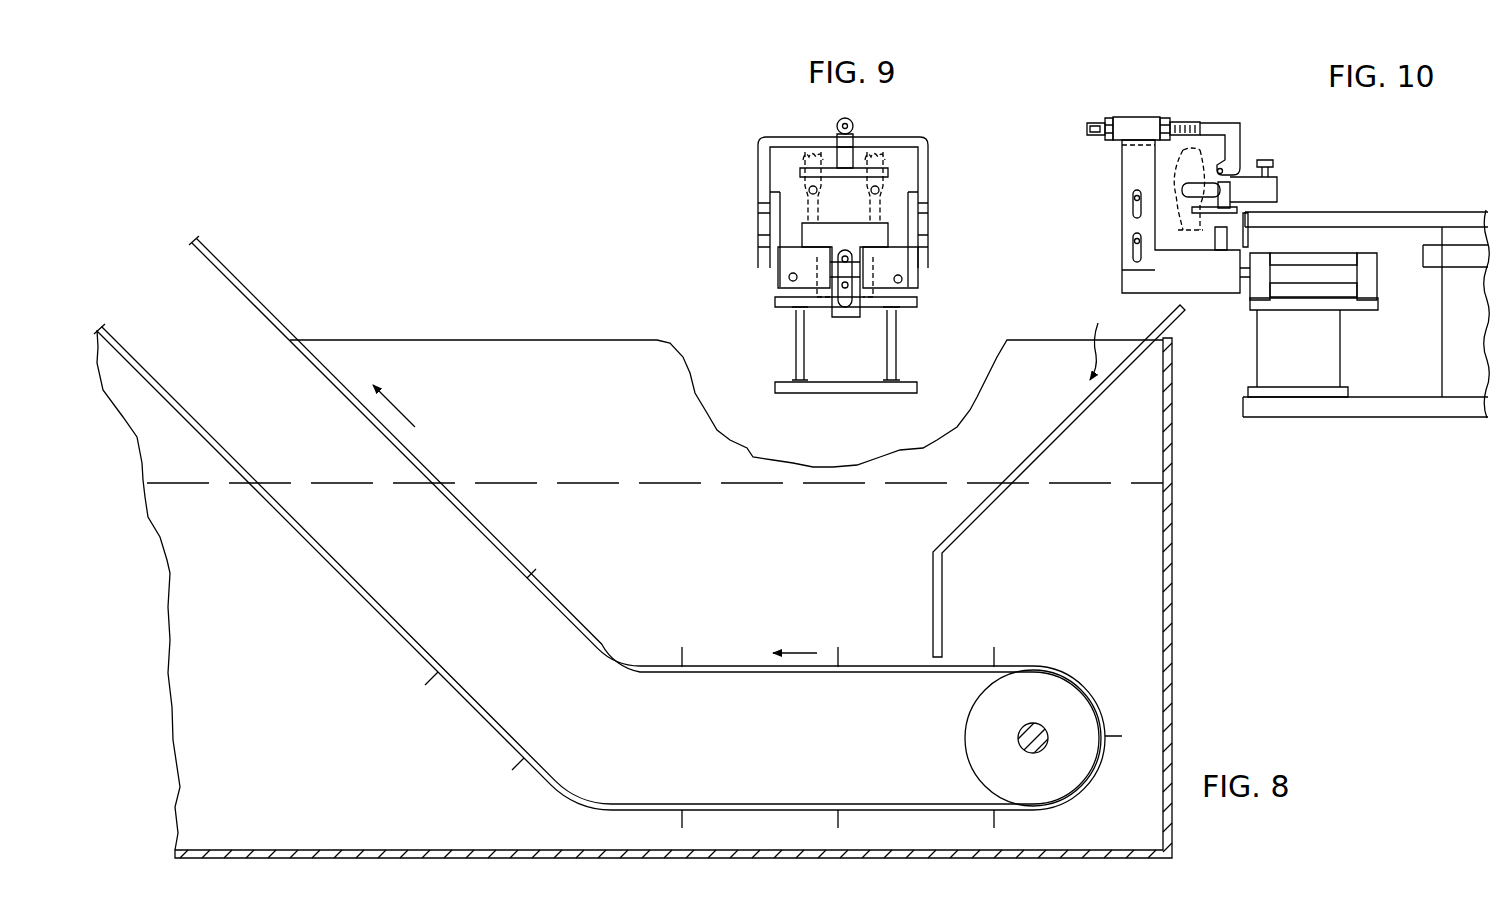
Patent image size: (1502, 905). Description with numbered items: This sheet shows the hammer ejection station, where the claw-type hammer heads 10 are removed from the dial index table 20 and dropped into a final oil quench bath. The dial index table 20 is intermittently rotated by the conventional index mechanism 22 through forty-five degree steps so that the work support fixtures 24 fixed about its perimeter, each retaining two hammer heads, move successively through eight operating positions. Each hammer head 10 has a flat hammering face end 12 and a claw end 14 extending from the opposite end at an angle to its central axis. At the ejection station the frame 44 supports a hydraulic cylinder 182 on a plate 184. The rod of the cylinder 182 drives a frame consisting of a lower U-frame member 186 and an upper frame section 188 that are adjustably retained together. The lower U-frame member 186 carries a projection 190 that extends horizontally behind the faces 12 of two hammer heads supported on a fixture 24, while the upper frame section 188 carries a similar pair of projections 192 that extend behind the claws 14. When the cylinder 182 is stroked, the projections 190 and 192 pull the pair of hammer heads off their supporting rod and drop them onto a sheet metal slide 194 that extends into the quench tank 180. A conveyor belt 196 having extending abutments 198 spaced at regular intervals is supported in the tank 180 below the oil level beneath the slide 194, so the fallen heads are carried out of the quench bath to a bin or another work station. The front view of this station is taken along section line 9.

In FIG. 10, the section line 9— 9 is at (1033, 135).
In FIG. 9, the hammer head 10 is at (808, 187).
In FIG. 10, the hammer head 10 is at (1188, 162).
In FIG. 9, the hammering face end 12 is at (870, 249).
In FIG. 10, the hammering face end 12 is at (1185, 240).
In FIG. 9, the claw end 14 is at (889, 157).
In FIG. 10, the claw end 14 is at (1204, 150).
In FIG. 10, the dial index table 20 is at (1387, 213).
In FIG. 10, the index mechanism 22 is at (1442, 308).
In FIG. 10, the work support fixture 24 is at (1279, 186).
In FIG. 10, the frame 44 is at (1373, 408).
In FIG. 8, the tank 180 is at (1172, 647).
In FIG. 10, the hydraulic cylinder 182 is at (1316, 268).
In FIG. 10, the plate 184 is at (1318, 355).
In FIG. 9, the lower U-frame member 186 is at (773, 277).
In FIG. 10, the lower U-frame member 186 is at (1125, 282).
In FIG. 9, the upper frame section 188 is at (928, 168).
In FIG. 10, the upper frame section 188 is at (1122, 185).
In FIG. 10, the projection 190 is at (1215, 247).
In FIG. 10, the projections 192 is at (1232, 152).
In FIG. 8, the sheet metal slide 194 is at (1062, 435).
In FIG. 8, the conveyor belt 196 is at (797, 673).
In FIG. 8, the abutments 198 is at (533, 573).